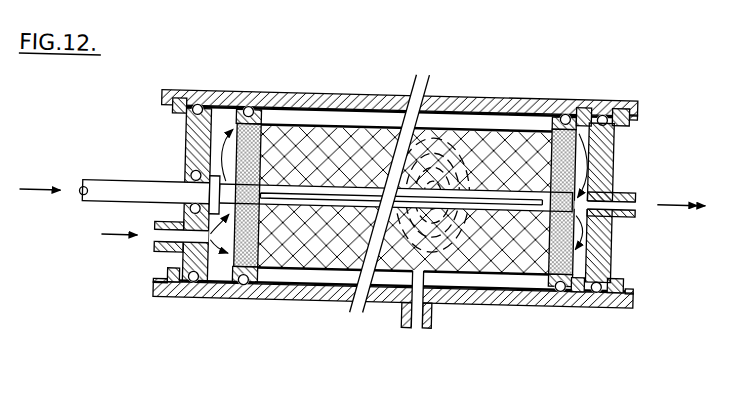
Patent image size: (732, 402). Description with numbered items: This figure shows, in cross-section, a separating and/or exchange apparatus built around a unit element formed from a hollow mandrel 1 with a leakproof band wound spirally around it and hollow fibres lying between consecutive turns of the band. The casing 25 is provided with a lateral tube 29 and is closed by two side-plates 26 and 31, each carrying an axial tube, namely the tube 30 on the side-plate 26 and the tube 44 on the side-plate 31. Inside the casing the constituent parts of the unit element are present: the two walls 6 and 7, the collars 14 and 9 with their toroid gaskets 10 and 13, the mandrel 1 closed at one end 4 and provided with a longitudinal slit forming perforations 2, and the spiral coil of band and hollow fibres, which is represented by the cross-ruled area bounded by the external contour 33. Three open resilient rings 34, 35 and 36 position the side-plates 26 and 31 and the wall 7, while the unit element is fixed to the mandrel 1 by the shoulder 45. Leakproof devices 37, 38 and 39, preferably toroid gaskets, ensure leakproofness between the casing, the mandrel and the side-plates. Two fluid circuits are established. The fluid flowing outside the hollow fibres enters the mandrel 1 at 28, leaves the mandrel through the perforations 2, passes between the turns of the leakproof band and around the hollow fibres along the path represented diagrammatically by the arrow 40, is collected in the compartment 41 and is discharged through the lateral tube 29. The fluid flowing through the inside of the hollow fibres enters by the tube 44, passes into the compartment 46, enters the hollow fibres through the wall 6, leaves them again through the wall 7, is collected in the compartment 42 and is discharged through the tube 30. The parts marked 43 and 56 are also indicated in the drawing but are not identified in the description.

The hollow mandrel 1 is at (139, 194).
The longitudinal slit 2 is at (341, 201).
The closed end of mandrel 4 is at (540, 190).
The wall 6 is at (276, 253).
The wall 7 is at (564, 241).
The collar 9 is at (271, 109).
The toroid gasket 10 is at (264, 100).
The toroid gasket 13 is at (564, 99).
The collar 14 is at (546, 112).
The casing 25 is at (436, 91).
The side-plate 26 is at (607, 238).
The mandrel inlet 28 is at (82, 190).
The lateral tube 29 is at (423, 307).
The axial tube 30 is at (641, 202).
The side-plate 31 is at (188, 125).
The external contour 33 is at (331, 112).
The open resilient ring 34 is at (182, 284).
The open resilient ring 35 is at (590, 285).
The open resilient ring 36 is at (625, 284).
The leakproof device 37 is at (189, 173).
The leakproof device 38 is at (196, 97).
The leakproof device 39 is at (600, 98).
The arrow 40 is at (409, 233).
The compartment 41 is at (371, 112).
The compartment 42 is at (586, 128).
The end plate 43 is at (609, 156).
The axial tube 44 is at (171, 237).
The shoulder 45 is at (228, 114).
The compartment 46 is at (232, 110).
The end plate flange 56 is at (186, 258).